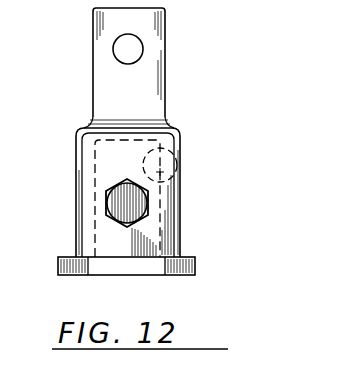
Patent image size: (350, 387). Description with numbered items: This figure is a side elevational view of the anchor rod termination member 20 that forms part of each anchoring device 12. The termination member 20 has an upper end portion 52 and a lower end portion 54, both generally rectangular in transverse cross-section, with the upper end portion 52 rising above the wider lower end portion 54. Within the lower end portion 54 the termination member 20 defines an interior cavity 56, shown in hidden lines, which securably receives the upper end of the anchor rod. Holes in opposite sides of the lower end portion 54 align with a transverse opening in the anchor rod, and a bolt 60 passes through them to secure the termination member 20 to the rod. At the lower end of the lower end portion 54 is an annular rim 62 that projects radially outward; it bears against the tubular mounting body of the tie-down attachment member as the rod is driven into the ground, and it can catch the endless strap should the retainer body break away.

The anchor rod termination member 20 is at (152, 157).
The anchoring device 12 is at (182, 88).
The upper end portion 52 is at (93, 73).
The lower end portion 54 is at (180, 198).
The interior cavity 56 is at (178, 170).
The bolt 60 is at (119, 205).
The annular rim 62 is at (88, 275).